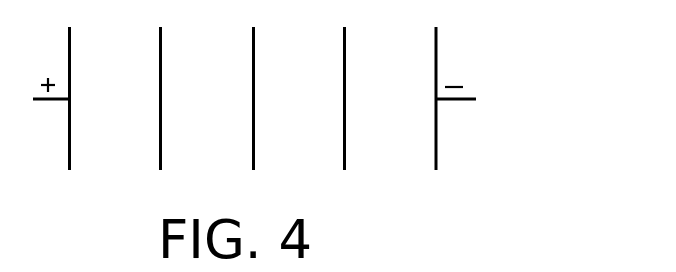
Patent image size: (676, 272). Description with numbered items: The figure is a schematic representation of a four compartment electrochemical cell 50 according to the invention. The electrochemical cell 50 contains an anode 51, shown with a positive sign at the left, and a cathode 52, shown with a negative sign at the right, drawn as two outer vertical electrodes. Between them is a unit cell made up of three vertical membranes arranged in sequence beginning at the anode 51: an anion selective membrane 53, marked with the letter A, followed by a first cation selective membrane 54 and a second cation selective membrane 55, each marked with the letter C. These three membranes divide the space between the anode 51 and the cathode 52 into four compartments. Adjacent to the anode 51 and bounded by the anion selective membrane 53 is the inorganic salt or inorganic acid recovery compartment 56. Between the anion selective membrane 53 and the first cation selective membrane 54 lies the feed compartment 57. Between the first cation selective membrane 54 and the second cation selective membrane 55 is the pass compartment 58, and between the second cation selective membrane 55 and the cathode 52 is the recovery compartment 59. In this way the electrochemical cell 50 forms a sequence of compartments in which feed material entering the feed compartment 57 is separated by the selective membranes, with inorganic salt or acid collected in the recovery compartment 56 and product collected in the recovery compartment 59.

The electrochemical cell 50 is at (490, 46).
The anode 51 is at (70, 6).
The cathode 52 is at (448, 85).
The anion selective membrane 53 is at (163, 102).
The first cation selective membrane 54 is at (256, 102).
The second cation selective membrane 55 is at (343, 102).
The inorganic salt or inorganic acid recovery compartment 56 is at (112, 160).
The feed compartment 57 is at (205, 160).
The pass compartment 58 is at (299, 160).
The recovery compartment 59 is at (394, 160).